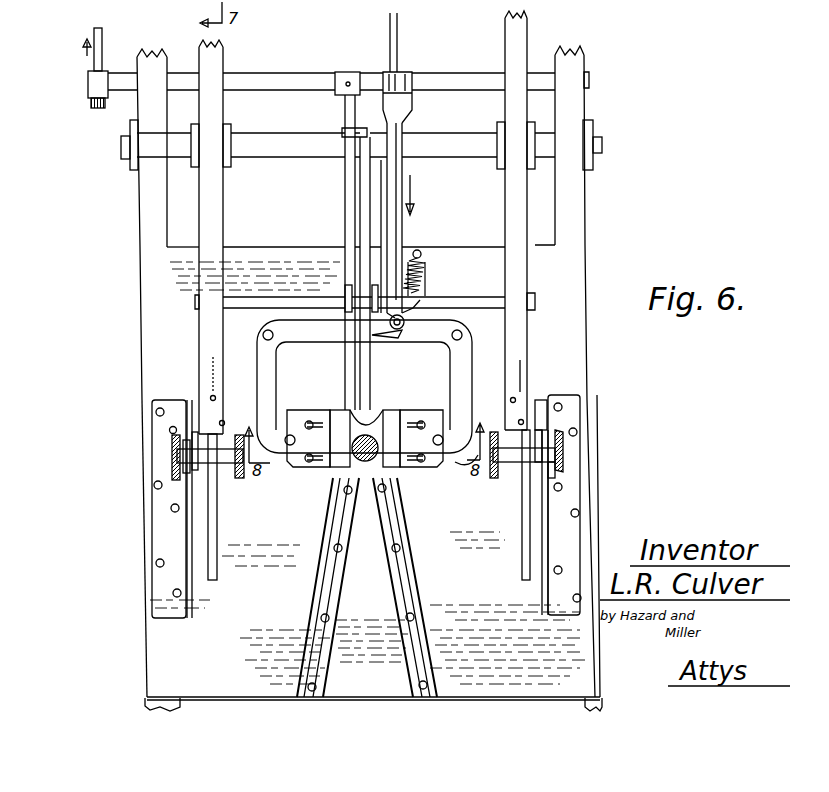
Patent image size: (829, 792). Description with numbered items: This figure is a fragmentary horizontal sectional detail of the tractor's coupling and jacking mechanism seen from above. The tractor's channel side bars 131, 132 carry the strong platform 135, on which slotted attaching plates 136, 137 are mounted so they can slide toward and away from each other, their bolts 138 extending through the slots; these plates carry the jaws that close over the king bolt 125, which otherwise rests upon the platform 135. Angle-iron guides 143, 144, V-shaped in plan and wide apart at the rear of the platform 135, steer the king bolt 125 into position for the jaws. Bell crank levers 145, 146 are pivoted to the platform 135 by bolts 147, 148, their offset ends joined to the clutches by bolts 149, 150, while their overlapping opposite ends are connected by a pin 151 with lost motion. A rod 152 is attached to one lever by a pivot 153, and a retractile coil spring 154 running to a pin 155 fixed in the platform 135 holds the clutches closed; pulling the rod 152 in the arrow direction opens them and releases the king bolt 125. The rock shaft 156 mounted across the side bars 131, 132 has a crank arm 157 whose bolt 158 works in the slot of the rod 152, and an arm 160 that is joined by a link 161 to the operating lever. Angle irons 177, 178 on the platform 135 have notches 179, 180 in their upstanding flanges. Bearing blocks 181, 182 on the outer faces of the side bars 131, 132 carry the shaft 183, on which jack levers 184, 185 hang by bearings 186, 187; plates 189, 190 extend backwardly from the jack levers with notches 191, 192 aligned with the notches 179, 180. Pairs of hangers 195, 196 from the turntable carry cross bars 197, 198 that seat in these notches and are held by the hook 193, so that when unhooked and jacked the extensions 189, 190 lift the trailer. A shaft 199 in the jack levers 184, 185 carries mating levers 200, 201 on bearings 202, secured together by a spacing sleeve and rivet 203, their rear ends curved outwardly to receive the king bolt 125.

The king bolt 125 is at (368, 470).
The side bar 131 is at (138, 198).
The side bar 132 is at (585, 65).
The platform 135 is at (140, 337).
The attaching plate 136 is at (290, 410).
The attaching plate 137 is at (425, 408).
The clamp screws 138 is at (330, 395).
The guide 143 is at (305, 588).
The guide 144 is at (458, 584).
The bell crank lever 145 is at (257, 360).
The bell crank lever 146 is at (478, 362).
The bolt 147 is at (223, 248).
The bolt 148 is at (472, 318).
The bolt 149 is at (328, 462).
The bolt 150 is at (455, 470).
The pin 151 is at (327, 330).
The rod 152 is at (398, 233).
The pivot 153 is at (400, 340).
The retractile coil spring 154 is at (427, 272).
The pin 155 is at (419, 251).
The rock shaft 156 is at (450, 75).
The crank arm 157 is at (403, 70).
The bolt 158 is at (385, 70).
The arm 160 is at (90, 96).
The link 161 is at (94, 32).
The angle iron 177 is at (152, 408).
The angle iron 178 is at (583, 412).
The notch 179 is at (143, 507).
The notch 180 is at (604, 522).
The bearing block 181 is at (121, 143).
The bearing block 182 is at (590, 125).
The shaft 183 is at (288, 92).
The jack lever 184 is at (223, 222).
The jack lever 185 is at (408, 236).
The hanging bearing 186 is at (230, 166).
The hanging bearing 187 is at (495, 168).
The plate 189 is at (217, 540).
The plate 190 is at (523, 537).
The notch 191 is at (240, 467).
The notch 192 is at (520, 470).
The hook 193 is at (170, 430).
The hangers 195 is at (175, 455).
The hangers 196 is at (565, 462).
The cross bar 197 is at (130, 522).
The cross bar 198 is at (639, 451).
The shaft 199 is at (242, 300).
The mating lever 200 is at (358, 212).
The mating lever 201 is at (346, 196).
The bearings 202 is at (345, 292).
The spacing sleeve and rivet 203 is at (356, 372).